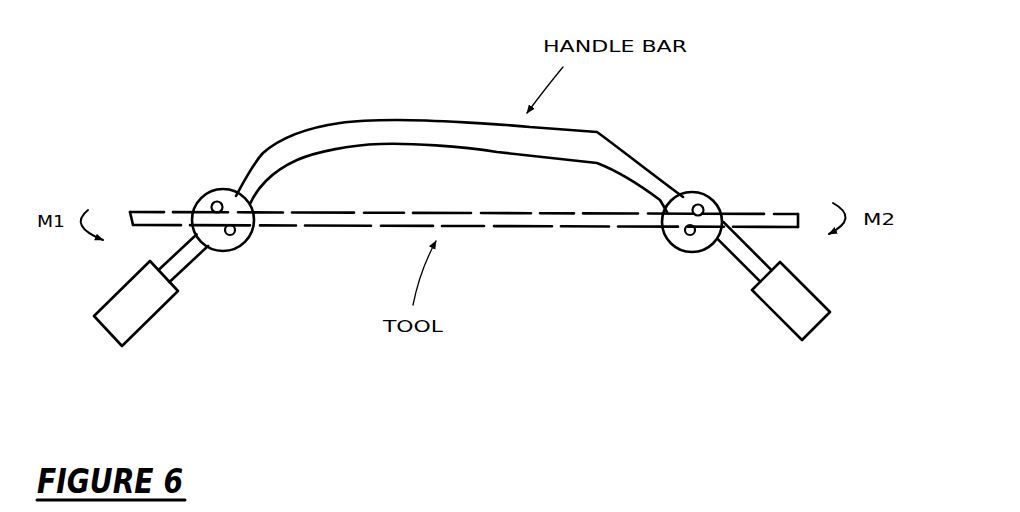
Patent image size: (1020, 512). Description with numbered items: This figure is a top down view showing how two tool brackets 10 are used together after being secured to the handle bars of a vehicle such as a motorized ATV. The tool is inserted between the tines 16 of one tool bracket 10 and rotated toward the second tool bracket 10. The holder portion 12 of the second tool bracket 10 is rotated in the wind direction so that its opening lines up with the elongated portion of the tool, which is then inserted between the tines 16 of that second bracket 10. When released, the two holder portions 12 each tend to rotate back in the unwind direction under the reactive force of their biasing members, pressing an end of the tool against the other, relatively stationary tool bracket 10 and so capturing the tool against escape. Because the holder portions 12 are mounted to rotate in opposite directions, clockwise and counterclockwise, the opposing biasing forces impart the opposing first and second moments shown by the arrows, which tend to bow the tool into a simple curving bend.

The tool bracket 10 is at (183, 202).
The holder portion 12 is at (236, 242).
The tines 16 is at (217, 188).